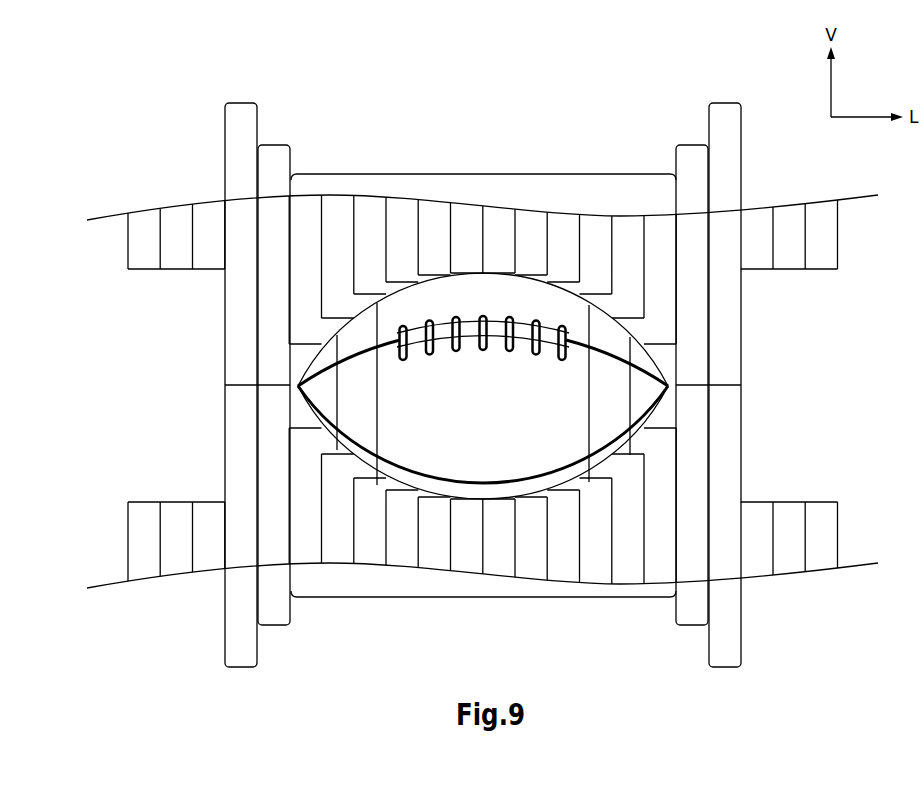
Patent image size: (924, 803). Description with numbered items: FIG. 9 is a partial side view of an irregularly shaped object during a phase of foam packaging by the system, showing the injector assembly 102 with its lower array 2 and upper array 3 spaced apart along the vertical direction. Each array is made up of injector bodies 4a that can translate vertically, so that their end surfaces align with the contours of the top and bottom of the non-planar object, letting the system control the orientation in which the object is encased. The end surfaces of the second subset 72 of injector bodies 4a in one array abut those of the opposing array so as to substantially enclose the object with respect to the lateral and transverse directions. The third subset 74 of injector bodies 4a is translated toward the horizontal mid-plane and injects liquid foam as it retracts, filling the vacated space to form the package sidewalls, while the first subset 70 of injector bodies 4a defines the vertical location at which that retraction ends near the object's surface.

The injector assembly 102 is at (126, 162).
The upper array 3 is at (112, 261).
The lower array 2 is at (108, 508).
The second subset of injector bodies 72 is at (254, 103).
The third subset of injector bodies 74 is at (287, 145).
The first subset of injector bodies 70 is at (490, 605).
The injector body 4a is at (732, 368).